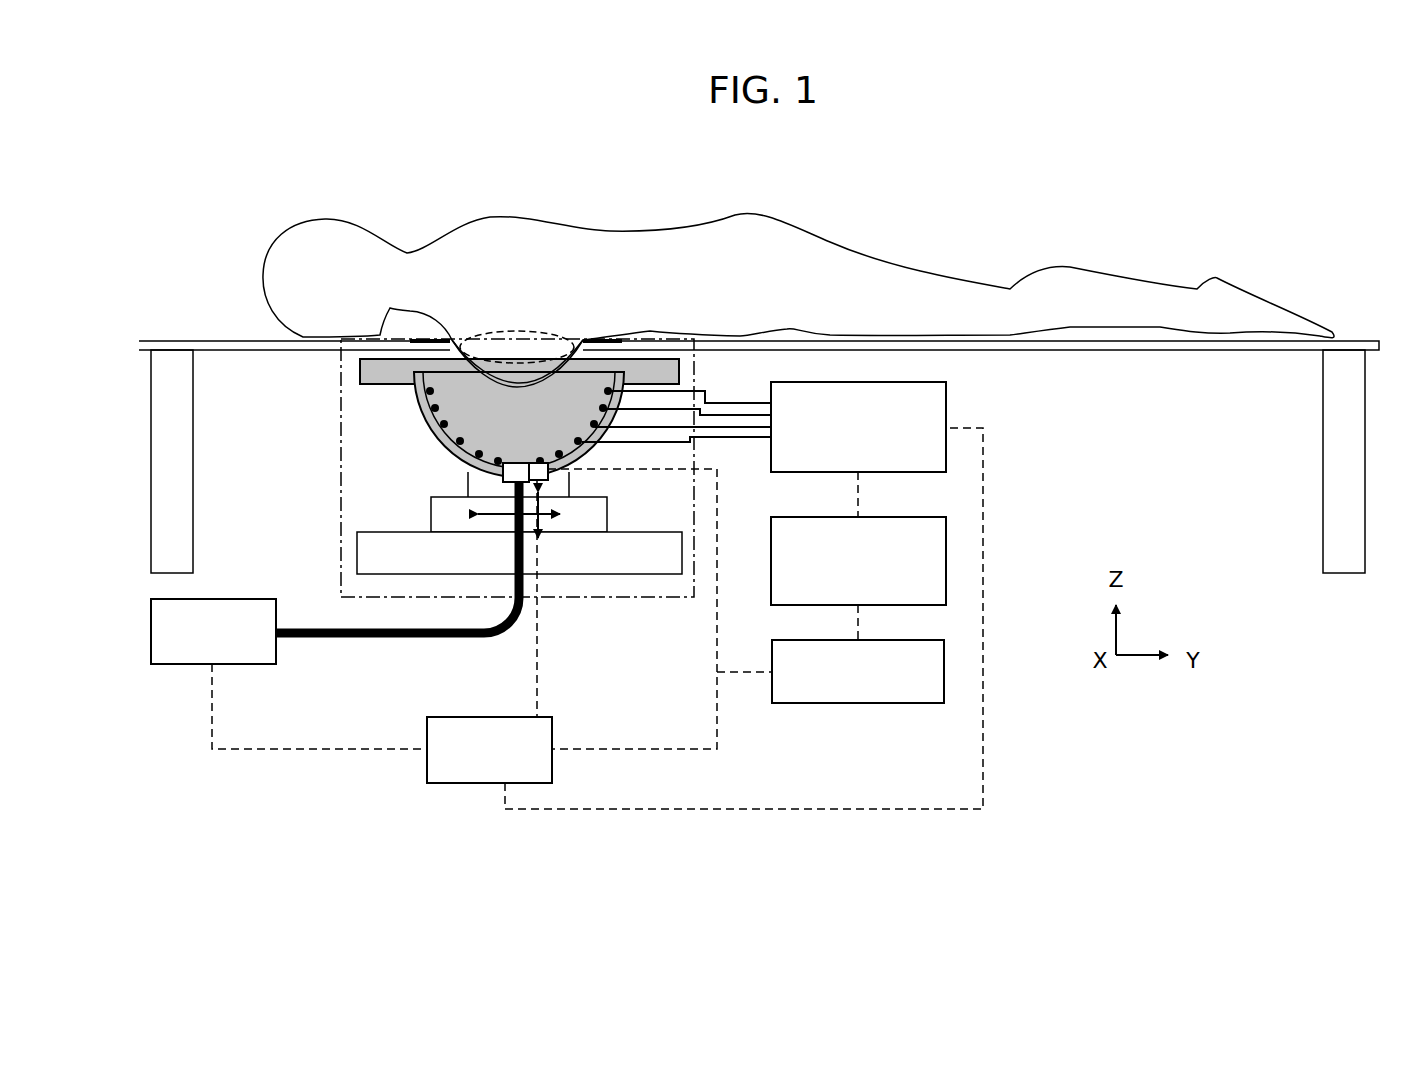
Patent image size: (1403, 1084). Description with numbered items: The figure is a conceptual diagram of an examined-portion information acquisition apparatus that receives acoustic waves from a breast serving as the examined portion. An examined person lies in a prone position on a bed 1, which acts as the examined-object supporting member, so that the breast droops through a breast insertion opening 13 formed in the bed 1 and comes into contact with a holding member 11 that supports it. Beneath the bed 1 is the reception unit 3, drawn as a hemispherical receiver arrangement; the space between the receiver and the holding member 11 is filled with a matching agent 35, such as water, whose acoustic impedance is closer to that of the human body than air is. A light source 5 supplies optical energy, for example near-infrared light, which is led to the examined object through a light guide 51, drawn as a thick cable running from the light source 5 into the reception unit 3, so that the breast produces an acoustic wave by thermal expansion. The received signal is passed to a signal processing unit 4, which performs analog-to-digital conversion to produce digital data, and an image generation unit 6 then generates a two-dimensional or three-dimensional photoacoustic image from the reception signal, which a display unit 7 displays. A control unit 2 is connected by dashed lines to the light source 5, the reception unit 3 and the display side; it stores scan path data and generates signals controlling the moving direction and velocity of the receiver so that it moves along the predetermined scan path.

The bed 1 is at (208, 342).
The control unit 2 is at (470, 784).
The reception unit 3 is at (537, 498).
The signal processing unit 4 is at (947, 407).
The light source 5 is at (176, 665).
The image generation unit 6 is at (947, 548).
The display unit 7 is at (945, 663).
The holding member 11 is at (545, 386).
The breast insertion opening 13 is at (527, 331).
The matching agent 35 is at (477, 427).
The light guide 51 is at (331, 638).